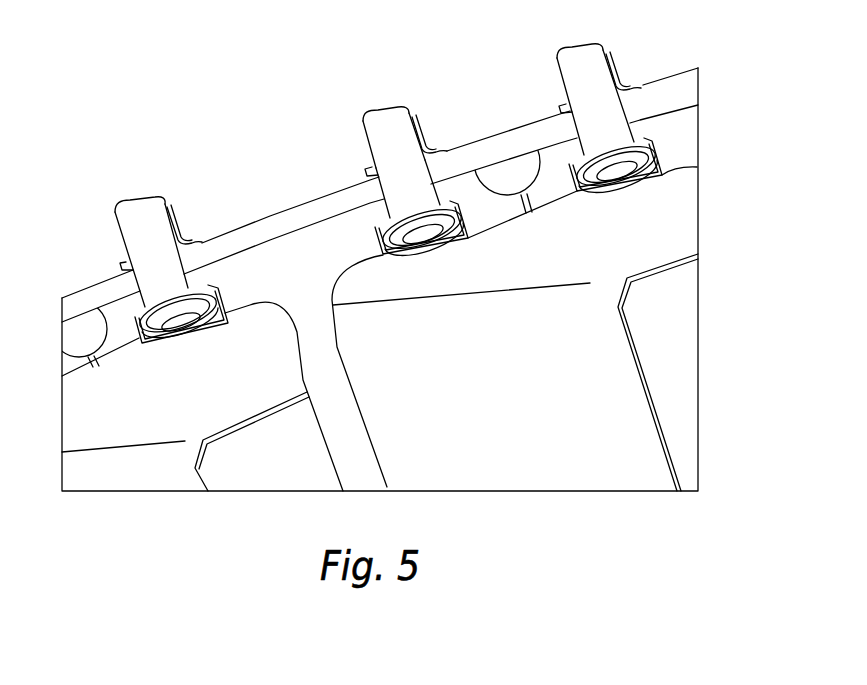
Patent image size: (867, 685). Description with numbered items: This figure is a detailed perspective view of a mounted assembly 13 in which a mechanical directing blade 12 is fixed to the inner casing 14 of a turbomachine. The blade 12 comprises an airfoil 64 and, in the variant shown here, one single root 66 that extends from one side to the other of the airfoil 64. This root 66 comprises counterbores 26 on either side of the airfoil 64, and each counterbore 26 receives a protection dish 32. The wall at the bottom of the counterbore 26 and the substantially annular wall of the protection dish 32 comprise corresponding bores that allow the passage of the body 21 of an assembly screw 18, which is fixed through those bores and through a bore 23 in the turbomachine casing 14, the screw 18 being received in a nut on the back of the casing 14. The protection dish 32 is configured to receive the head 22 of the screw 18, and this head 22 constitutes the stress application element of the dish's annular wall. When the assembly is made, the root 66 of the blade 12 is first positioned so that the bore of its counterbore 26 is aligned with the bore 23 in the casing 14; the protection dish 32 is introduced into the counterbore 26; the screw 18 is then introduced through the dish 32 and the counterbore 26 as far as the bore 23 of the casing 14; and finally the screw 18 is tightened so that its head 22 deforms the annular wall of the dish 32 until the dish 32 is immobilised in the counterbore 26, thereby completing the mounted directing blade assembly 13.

The blade 12 is at (428, 460).
The mounted assembly 13 is at (415, 174).
The casing 14 is at (687, 92).
The screw 18 is at (409, 185).
The body 21 is at (380, 128).
The head 22 is at (403, 245).
The bore 23 is at (397, 184).
The counterbore 26 is at (447, 193).
The protection dish 32 is at (466, 203).
The airfoil 64 is at (389, 453).
The root 66 is at (264, 255).